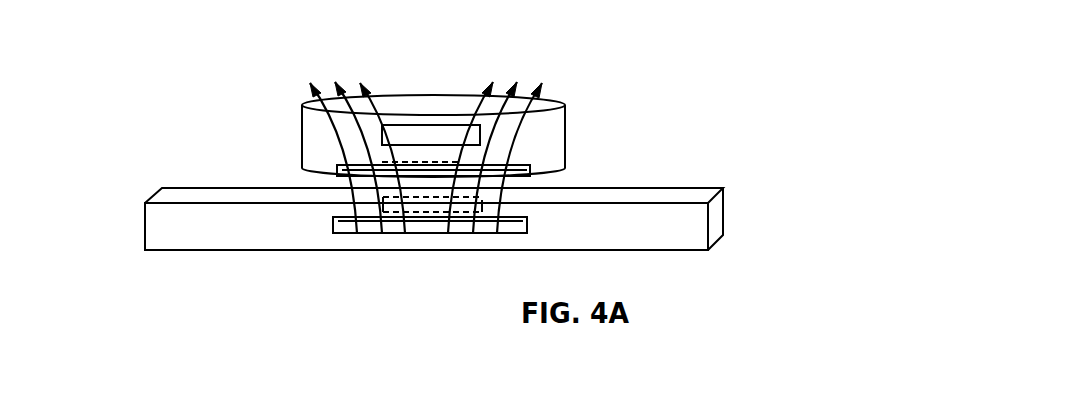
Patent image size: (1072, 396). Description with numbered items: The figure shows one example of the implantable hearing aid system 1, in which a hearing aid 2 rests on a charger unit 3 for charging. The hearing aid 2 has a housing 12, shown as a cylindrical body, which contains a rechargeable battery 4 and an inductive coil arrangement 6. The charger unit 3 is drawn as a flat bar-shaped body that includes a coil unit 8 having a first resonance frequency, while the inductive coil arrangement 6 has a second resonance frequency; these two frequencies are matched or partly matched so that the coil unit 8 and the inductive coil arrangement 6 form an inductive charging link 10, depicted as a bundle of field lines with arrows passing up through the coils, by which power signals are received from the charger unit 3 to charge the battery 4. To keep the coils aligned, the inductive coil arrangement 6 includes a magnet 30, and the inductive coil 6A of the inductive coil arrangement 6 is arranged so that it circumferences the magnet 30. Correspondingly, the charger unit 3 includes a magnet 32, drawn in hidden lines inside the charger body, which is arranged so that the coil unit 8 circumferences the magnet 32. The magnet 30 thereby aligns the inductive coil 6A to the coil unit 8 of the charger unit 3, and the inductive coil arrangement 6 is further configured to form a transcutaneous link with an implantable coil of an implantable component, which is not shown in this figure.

The implantable hearing aid system 1 is at (960, 100).
The hearing aid 2 is at (433, 100).
The housing 12 is at (400, 92).
The charger unit 3 is at (153, 195).
The rechargeable battery 4 is at (493, 113).
The magnet 30 is at (472, 156).
The inductive coil arrangement 6 is at (488, 150).
The inductive coil 6A is at (530, 170).
The magnet 32 is at (482, 212).
The coil unit 8 is at (352, 234).
The inductive charging link 10 is at (329, 128).